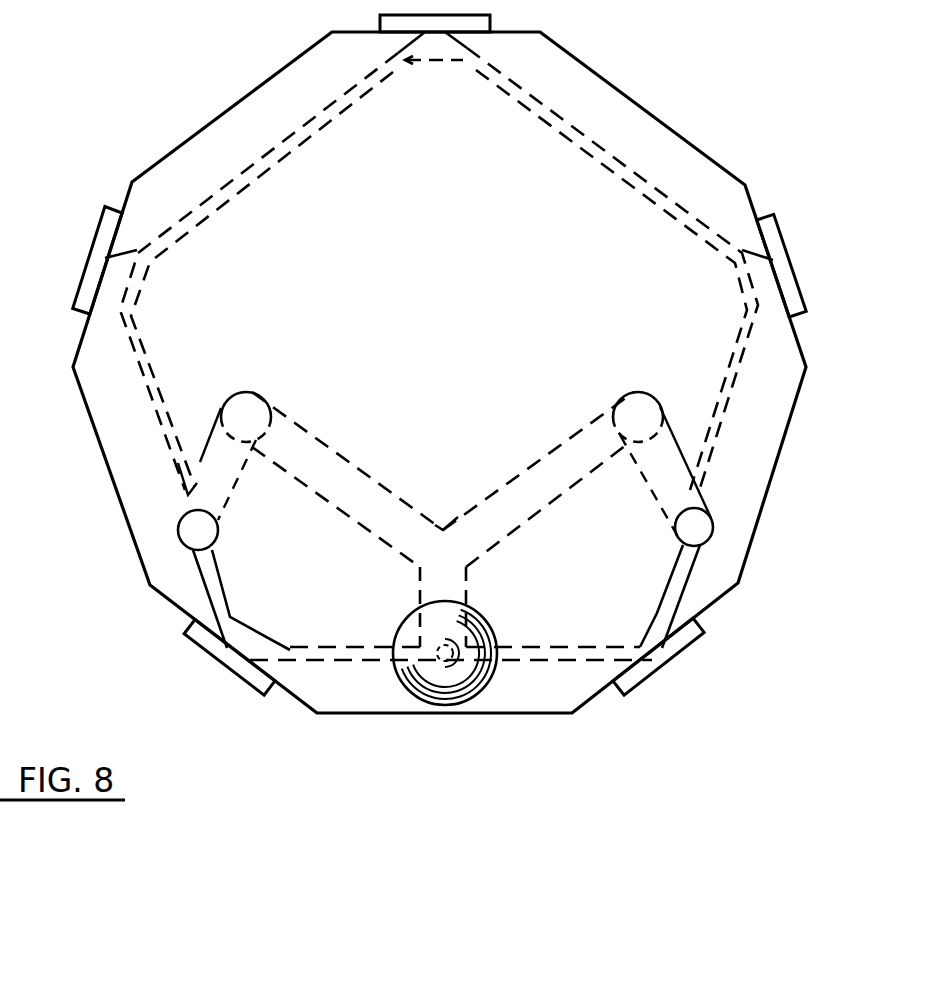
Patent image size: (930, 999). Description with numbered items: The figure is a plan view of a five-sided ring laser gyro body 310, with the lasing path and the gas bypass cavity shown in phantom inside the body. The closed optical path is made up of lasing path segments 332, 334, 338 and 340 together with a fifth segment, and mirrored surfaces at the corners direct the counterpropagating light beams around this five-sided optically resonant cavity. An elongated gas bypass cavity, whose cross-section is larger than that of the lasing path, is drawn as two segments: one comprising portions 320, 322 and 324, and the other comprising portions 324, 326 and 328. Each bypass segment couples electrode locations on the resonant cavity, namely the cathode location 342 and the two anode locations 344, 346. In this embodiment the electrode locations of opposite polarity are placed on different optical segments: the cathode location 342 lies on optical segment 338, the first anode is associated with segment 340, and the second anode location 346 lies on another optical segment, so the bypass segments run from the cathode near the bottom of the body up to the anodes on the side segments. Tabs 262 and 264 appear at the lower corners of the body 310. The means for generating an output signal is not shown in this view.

The ring laser gyro body 310 is at (622, 95).
The latch tab 262 is at (660, 651).
The latch tab 264 is at (229, 651).
The gas bypass cavity segment 320 is at (237, 483).
The gas bypass cavity segment 322 is at (340, 480).
The gas bypass cavity segment 324 is at (466, 598).
The gas bypass cavity segment 326 is at (548, 496).
The gas bypass cavity segment 328 is at (692, 493).
The lasing path segment 332 is at (329, 108).
The lasing path segment 334 is at (597, 148).
The lasing path segment 338 is at (542, 652).
The lasing path segment 340 is at (155, 400).
The cathode location 342 is at (440, 672).
The electrode location 344 is at (204, 533).
The anode location 346 is at (713, 527).